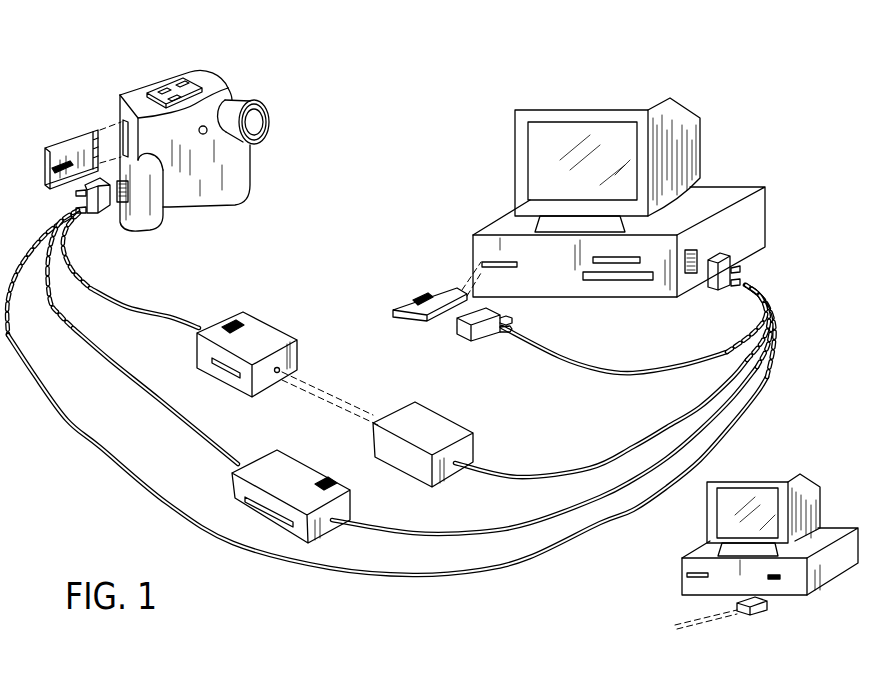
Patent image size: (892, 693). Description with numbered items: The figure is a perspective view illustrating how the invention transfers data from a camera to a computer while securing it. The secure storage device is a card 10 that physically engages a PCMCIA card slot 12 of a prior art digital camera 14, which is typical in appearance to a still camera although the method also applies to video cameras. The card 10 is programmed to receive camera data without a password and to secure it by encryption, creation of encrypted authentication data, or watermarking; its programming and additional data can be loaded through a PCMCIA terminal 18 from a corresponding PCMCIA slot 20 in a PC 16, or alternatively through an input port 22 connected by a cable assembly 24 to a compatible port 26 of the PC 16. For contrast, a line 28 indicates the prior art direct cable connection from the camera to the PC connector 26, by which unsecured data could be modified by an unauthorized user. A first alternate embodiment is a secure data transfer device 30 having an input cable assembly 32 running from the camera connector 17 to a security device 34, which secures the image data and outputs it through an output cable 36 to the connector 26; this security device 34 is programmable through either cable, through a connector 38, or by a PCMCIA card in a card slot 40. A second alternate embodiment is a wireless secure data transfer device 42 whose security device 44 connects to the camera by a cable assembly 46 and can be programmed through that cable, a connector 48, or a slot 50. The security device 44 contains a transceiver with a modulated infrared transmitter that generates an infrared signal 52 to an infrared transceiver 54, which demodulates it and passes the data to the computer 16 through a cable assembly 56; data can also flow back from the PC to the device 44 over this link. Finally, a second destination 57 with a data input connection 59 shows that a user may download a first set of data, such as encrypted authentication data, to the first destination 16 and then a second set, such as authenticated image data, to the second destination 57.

The card 10 is at (60, 140).
The PCMCIA card slot 12 is at (122, 122).
The digital camera 14 is at (211, 80).
The PC 16 is at (441, 247).
The connector 17 is at (119, 204).
The PCMCIA terminal 18 is at (97, 128).
The PCMCIA slot 20 is at (484, 262).
The input port 22 is at (70, 186).
The cable assembly 24 is at (552, 346).
The port 26 is at (689, 273).
The line 28 is at (99, 448).
The secure data transfer device 30 is at (306, 450).
The input cable assembly 32 is at (107, 363).
The security device 34 is at (281, 445).
The output cable 36 is at (491, 521).
The connector 38 is at (337, 484).
The PCMCIA card slot 40 is at (250, 513).
The wireless secure data transfer device 42 is at (430, 396).
The security device 44 is at (264, 326).
The cable assembly 46 is at (170, 310).
The connector 48 is at (230, 322).
The slot 50 is at (221, 368).
The infrared signal 52 is at (358, 392).
The infrared transceiver 54 is at (438, 418).
The cable assembly 56 is at (570, 466).
The second destination 57 is at (662, 563).
The data input connection 59 is at (777, 581).